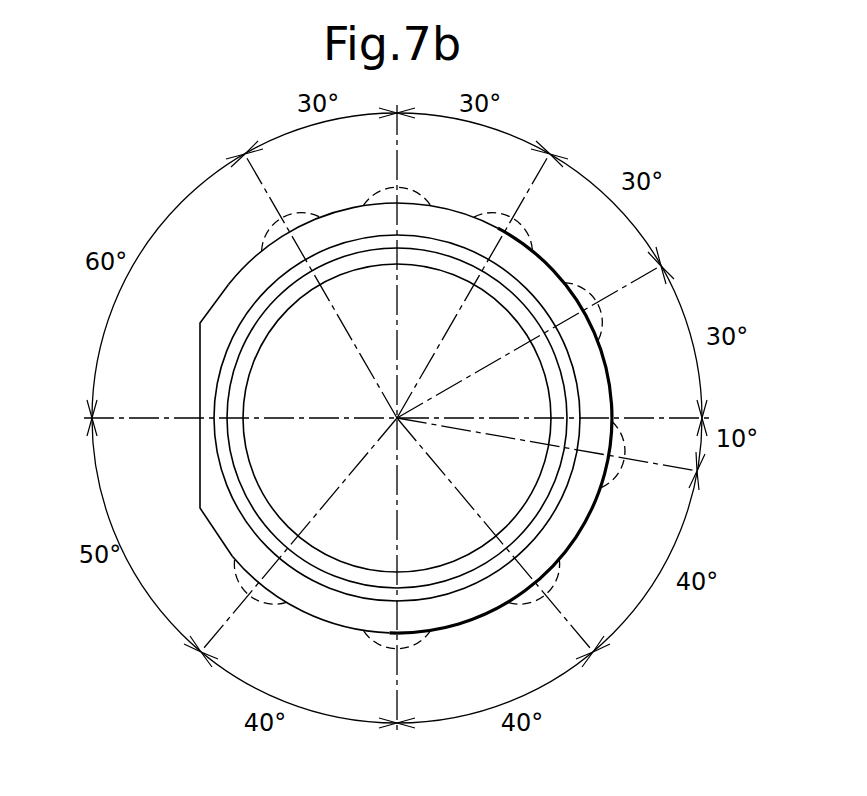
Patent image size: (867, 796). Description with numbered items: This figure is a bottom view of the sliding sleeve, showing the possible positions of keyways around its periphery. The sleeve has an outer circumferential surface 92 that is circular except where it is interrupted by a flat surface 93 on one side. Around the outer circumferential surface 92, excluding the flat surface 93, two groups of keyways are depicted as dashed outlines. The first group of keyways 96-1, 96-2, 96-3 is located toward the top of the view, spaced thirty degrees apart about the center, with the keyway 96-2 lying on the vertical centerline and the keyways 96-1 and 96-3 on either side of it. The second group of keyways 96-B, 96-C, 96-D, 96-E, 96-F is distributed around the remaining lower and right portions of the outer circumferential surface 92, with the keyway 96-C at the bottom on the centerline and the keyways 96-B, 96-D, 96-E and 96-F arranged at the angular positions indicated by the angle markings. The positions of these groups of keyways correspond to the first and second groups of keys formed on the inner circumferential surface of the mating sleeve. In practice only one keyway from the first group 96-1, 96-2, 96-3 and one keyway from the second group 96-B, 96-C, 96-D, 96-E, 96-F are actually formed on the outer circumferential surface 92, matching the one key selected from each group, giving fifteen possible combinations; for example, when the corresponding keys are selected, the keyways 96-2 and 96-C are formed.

The outer circumferential surface 92 is at (228, 283).
The flat surface 93 is at (200, 365).
The keyway 96-1 is at (302, 230).
The keyway 96-2 is at (412, 206).
The keyway 96-3 is at (513, 243).
The keyway 96-F is at (597, 328).
The keyway 96-E is at (603, 490).
The keyway 96-D is at (524, 604).
The keyway 96-C is at (387, 630).
The keyway 96-B is at (237, 566).